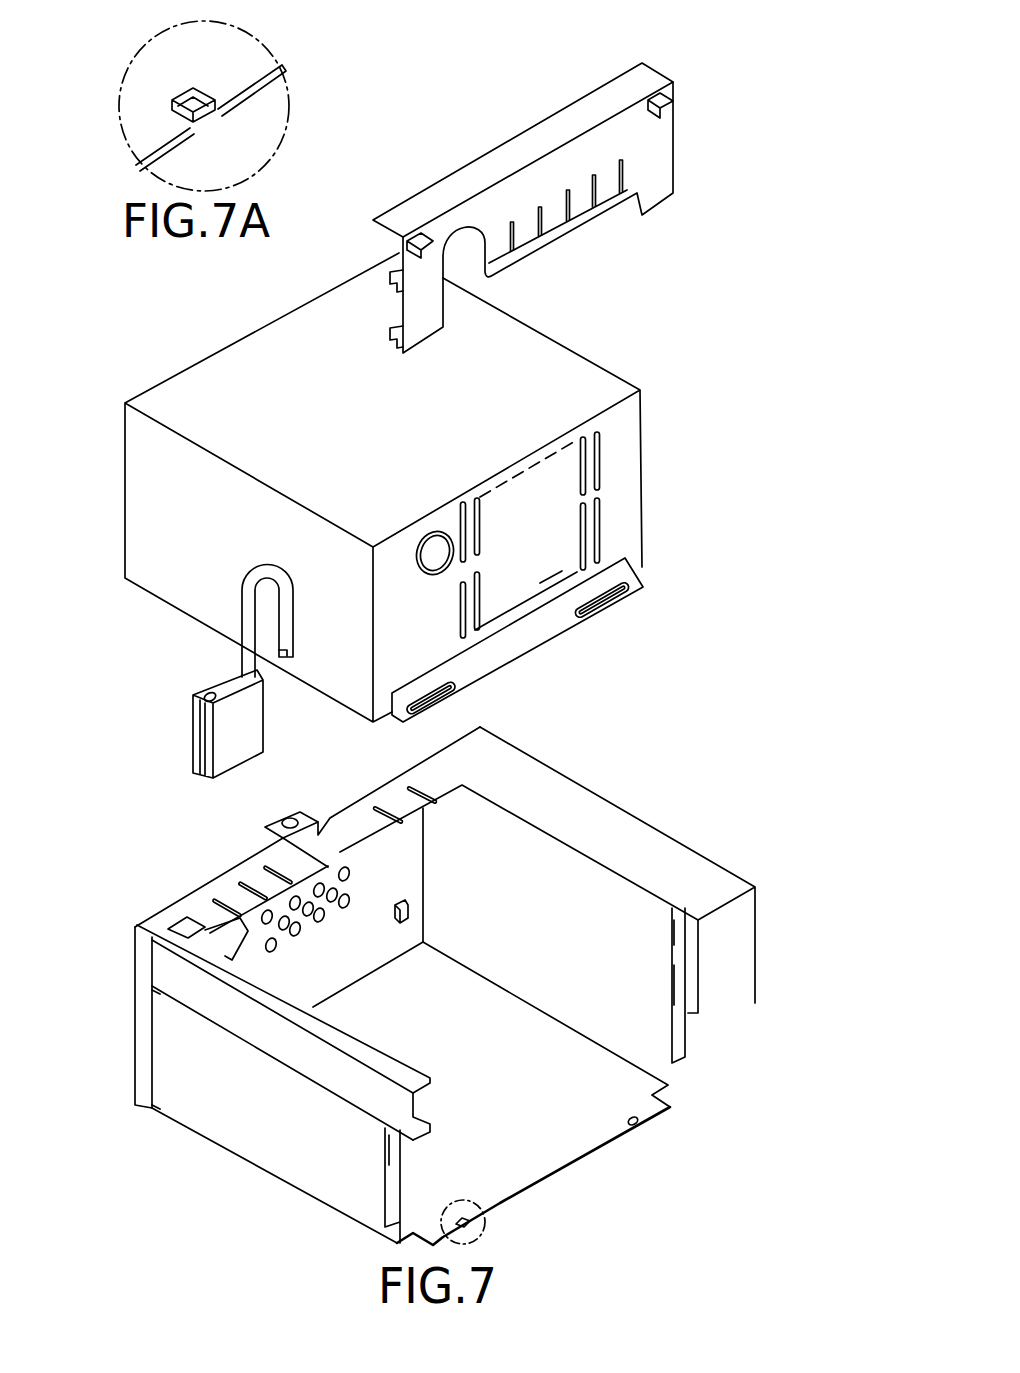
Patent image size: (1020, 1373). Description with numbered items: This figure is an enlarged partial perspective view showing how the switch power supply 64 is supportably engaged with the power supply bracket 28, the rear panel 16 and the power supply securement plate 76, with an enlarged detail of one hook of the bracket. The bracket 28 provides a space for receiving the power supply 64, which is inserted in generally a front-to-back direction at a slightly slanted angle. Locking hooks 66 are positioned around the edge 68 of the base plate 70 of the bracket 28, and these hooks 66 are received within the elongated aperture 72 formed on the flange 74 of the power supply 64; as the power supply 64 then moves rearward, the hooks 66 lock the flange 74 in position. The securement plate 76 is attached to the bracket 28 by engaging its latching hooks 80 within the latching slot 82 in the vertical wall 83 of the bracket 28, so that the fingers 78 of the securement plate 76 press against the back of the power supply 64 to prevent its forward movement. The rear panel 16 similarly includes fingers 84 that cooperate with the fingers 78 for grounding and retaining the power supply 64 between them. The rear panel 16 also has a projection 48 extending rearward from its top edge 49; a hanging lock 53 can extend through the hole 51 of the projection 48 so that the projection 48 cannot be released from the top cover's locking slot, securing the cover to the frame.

In FIG. 7, the rear panel 16 is at (303, 967).
In FIG. 7, the power supply bracket 28 is at (241, 1152).
In FIG. 7, the projection 48 is at (298, 812).
In FIG. 7, the top edge 49 is at (168, 918).
In FIG. 7, the hole 51 is at (263, 832).
In FIG. 7, the hanging lock 53 is at (177, 730).
In FIG. 7, the power supply 64 is at (201, 597).
In FIG. 7A, the locking hooks 66 is at (267, 86).
In FIG. 7, the locking hooks 66 is at (510, 1197).
In FIG. 7A, the edge 68 is at (190, 101).
In FIG. 7, the edge 68 is at (600, 1150).
In FIG. 7A, the base plate 70 is at (195, 62).
In FIG. 7, the base plate 70 is at (502, 1076).
In FIG. 7, the elongated aperture 72 is at (617, 603).
In FIG. 7, the flange 74 is at (522, 647).
In FIG. 7, the power supply securement plate 76 is at (657, 180).
In FIG. 7, the fingers 78 is at (582, 205).
In FIG. 7, the latching hooks 80 is at (390, 278).
In FIG. 7, the latching slot 82 is at (672, 922).
In FIG. 7, the vertical wall 83 is at (310, 1142).
In FIG. 7, the fingers 84 is at (210, 918).